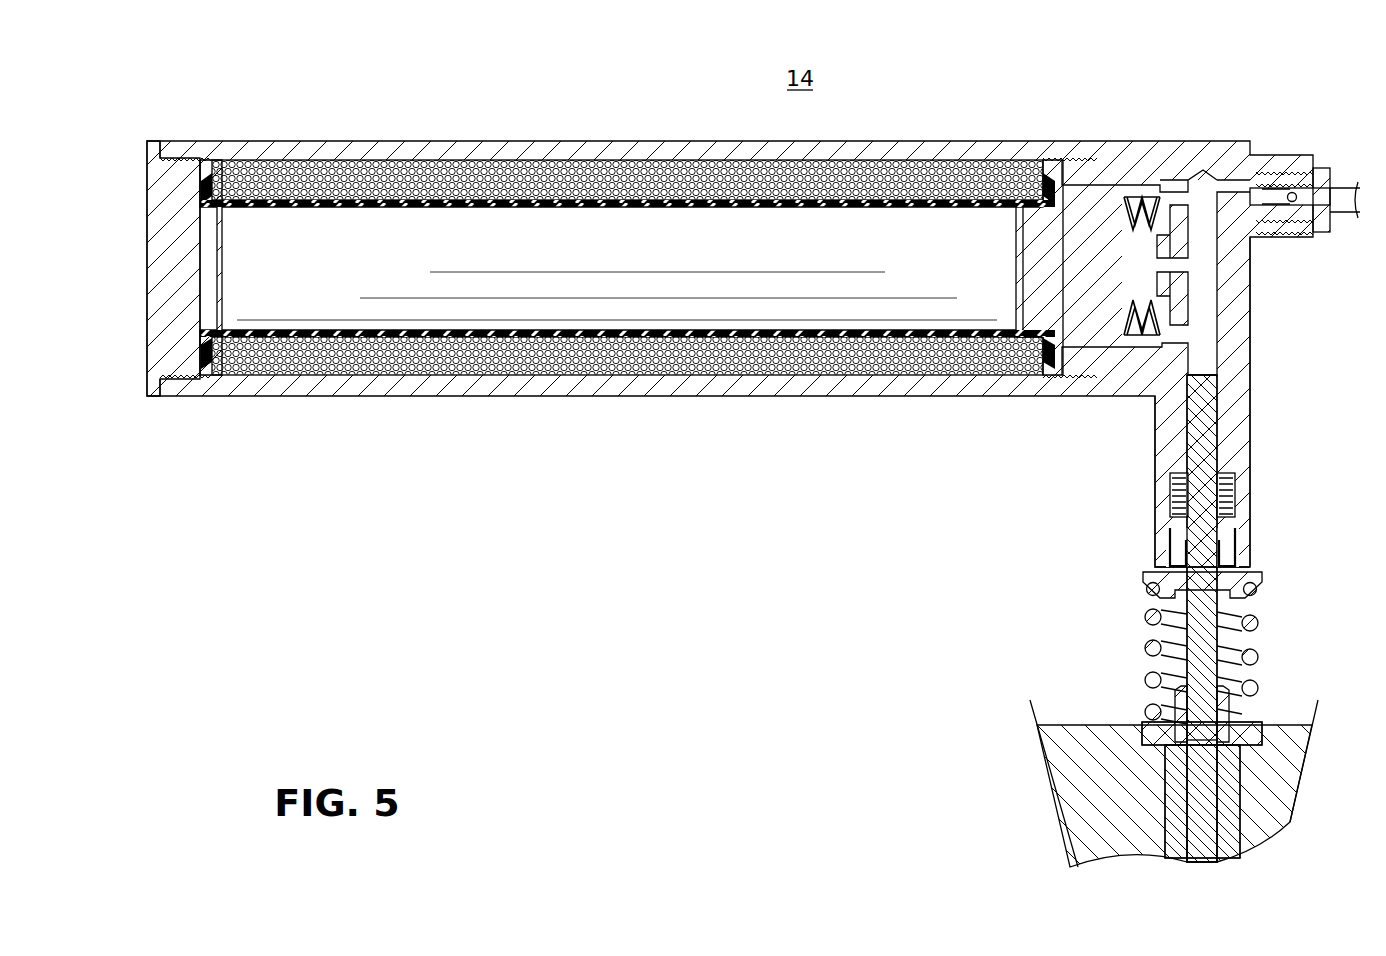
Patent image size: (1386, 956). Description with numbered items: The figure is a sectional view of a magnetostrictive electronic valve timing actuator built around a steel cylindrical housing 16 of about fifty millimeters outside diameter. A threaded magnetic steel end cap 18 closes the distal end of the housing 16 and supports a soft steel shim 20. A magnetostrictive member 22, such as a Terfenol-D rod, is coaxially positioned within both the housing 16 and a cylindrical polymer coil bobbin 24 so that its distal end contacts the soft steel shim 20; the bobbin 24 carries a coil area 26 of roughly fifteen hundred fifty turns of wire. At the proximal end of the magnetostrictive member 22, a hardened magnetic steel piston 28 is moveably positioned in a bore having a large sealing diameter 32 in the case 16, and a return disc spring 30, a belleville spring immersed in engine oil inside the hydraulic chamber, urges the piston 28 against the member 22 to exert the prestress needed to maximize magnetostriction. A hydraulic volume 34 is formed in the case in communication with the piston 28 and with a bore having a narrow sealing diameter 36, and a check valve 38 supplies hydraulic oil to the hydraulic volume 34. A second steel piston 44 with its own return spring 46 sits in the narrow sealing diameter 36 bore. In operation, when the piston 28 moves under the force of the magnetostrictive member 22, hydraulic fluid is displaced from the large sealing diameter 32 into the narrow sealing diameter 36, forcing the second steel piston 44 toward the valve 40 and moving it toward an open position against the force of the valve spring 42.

The cylindrical housing 16 is at (330, 147).
The end cap 18 is at (155, 328).
The soft steel shim 20 is at (232, 250).
The magnetostrictive member 22 is at (507, 290).
The polymer coil bobbin 24 is at (520, 195).
The coil area 26 is at (358, 358).
The hardened magnetic steel piston 28 is at (1090, 237).
The return disc spring 30 is at (1138, 343).
The large sealing diameter 32 is at (1103, 215).
The hydraulic volume 34 is at (1210, 296).
The narrow sealing diameter 36 is at (1218, 413).
The check valve 38 is at (1283, 190).
The valve 40 is at (1202, 647).
The valve spring 42 is at (1152, 635).
The second steel piston 44 is at (1200, 420).
The return spring 46 is at (1228, 493).